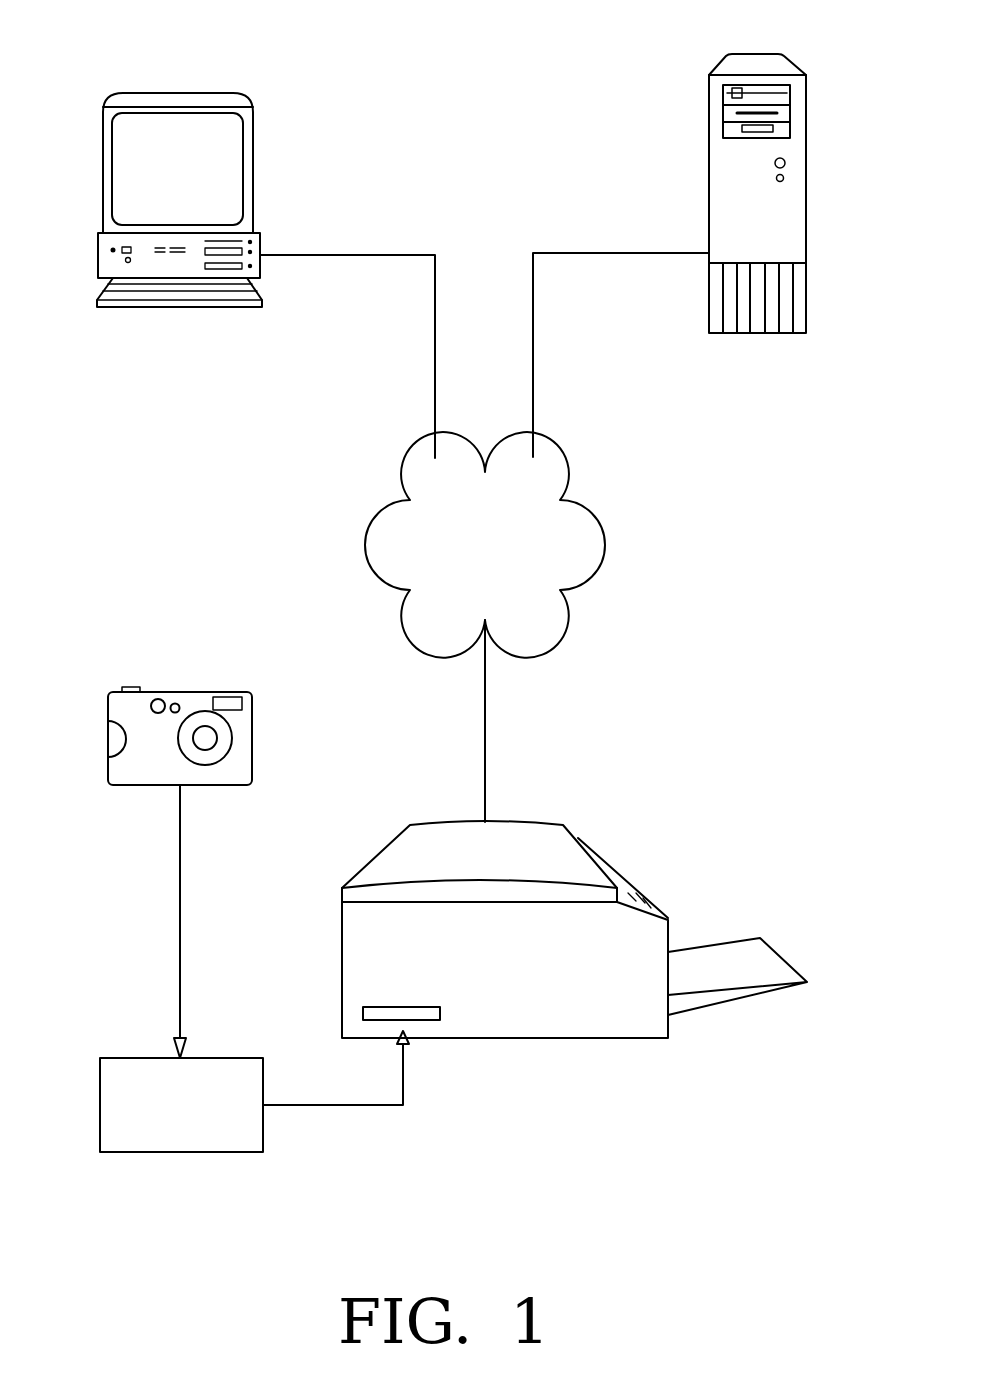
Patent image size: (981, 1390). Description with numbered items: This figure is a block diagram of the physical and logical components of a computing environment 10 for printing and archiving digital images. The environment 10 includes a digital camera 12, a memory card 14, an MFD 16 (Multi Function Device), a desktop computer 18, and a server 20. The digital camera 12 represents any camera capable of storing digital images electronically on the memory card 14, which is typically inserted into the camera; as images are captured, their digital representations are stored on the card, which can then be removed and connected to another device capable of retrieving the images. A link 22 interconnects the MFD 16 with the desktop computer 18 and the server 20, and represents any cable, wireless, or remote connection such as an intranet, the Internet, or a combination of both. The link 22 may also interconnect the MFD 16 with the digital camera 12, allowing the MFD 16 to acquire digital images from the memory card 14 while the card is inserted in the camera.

The environment 10 is at (555, 78).
The digital camera 12 is at (197, 692).
The memory card 14 is at (137, 1058).
The MFD 16 is at (520, 833).
The desktop computer 18 is at (180, 102).
The server 20 is at (757, 62).
The link 22 is at (580, 522).